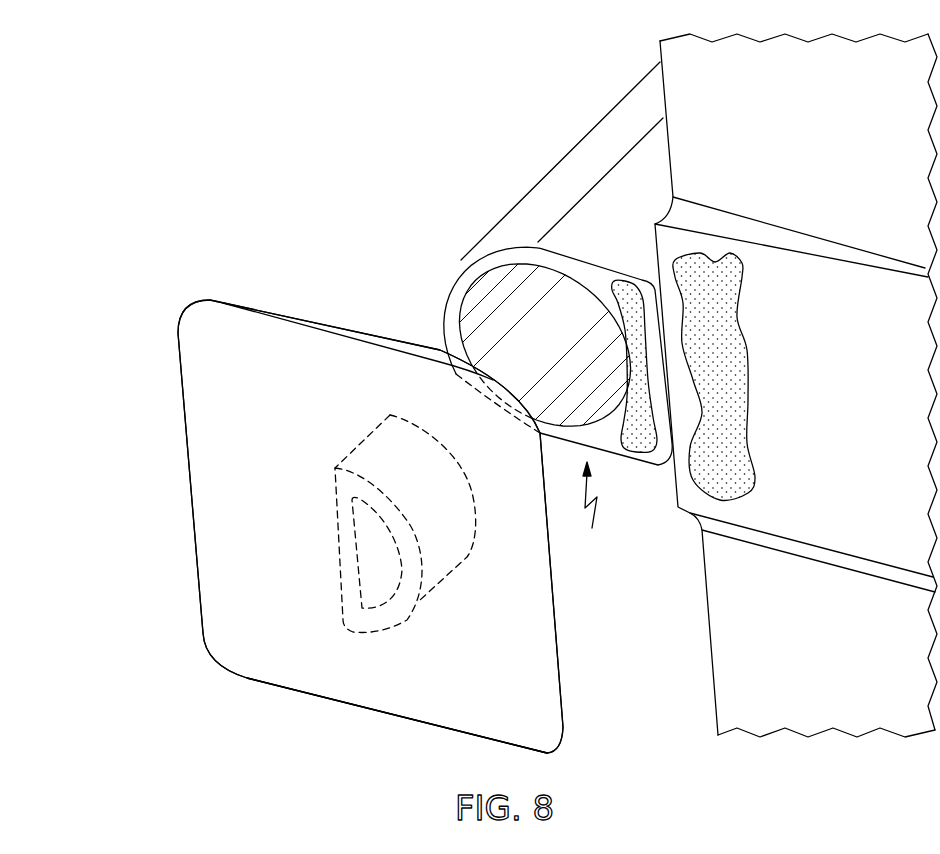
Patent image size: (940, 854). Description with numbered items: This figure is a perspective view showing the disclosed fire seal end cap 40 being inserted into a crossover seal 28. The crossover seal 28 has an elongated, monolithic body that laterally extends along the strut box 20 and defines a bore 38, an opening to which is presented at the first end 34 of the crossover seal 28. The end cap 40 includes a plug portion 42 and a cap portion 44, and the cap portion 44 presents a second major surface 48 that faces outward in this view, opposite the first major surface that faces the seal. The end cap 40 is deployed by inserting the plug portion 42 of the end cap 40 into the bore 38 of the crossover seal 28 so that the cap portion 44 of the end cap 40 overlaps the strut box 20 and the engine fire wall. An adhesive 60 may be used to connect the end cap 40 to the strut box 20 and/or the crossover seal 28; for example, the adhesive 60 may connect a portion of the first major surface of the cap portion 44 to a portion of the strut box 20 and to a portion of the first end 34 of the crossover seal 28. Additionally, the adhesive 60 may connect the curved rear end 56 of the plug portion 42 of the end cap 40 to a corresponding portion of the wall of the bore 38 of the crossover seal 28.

The strut box 20 is at (733, 643).
The crossover seal 28 is at (584, 166).
The first end 34 is at (590, 512).
The bore 38 is at (490, 287).
The end cap 40 is at (197, 302).
The plug portion 42 is at (453, 510).
The cap portion 44 is at (367, 697).
The second major surface 48 is at (497, 680).
The curved rear end 56 is at (420, 443).
The adhesive 60 is at (630, 290).